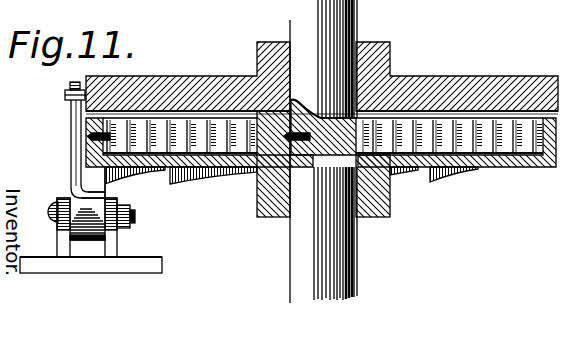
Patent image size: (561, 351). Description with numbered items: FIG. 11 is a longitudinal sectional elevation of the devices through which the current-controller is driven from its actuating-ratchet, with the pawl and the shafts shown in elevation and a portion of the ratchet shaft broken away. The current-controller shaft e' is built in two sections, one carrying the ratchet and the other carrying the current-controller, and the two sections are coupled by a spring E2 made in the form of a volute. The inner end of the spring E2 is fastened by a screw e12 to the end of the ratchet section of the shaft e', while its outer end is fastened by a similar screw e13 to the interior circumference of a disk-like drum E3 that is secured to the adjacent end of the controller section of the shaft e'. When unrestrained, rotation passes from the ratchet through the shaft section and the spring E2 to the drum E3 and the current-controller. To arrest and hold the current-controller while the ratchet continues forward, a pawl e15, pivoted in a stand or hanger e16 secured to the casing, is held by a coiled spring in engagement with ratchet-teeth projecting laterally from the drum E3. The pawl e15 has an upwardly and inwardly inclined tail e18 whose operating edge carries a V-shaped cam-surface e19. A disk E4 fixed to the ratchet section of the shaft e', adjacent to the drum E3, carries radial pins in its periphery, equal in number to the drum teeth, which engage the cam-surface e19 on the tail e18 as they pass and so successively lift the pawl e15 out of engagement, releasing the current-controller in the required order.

The current-controller shaft e' is at (348, 150).
The screw e12 is at (300, 99).
The screw e13 is at (88, 135).
The pawl e15 is at (107, 190).
The stand or hanger e16 is at (91, 235).
The tail e18 is at (71, 152).
The V-shaped cam-surface e19 is at (70, 84).
The spring E2 is at (520, 148).
The disk-like drum E3 is at (291, 183).
The disk E4 is at (322, 78).